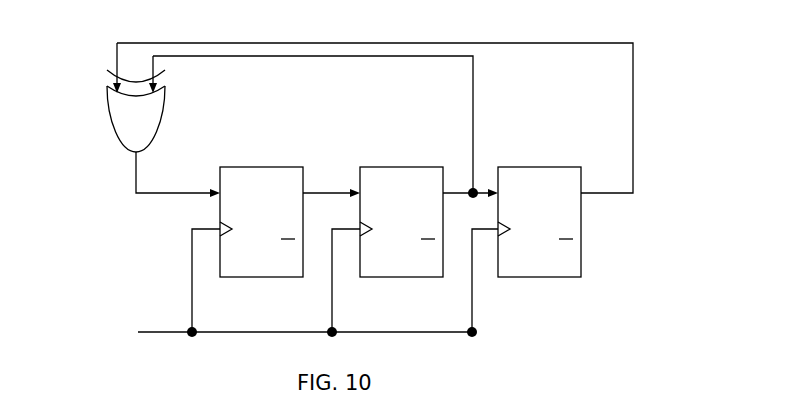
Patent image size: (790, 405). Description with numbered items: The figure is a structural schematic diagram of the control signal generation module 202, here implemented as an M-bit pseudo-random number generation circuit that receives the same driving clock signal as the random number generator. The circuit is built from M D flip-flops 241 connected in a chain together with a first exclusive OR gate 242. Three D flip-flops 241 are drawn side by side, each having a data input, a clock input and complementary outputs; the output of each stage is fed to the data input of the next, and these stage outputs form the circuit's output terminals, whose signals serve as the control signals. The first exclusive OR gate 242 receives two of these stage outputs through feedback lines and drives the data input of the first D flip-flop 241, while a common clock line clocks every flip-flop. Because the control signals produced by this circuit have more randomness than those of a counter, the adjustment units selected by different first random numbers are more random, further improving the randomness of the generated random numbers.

The control signal generation module 202 is at (120, 246).
The D flip-flop 241 is at (245, 167).
The first exclusive OR gate 242 is at (165, 107).